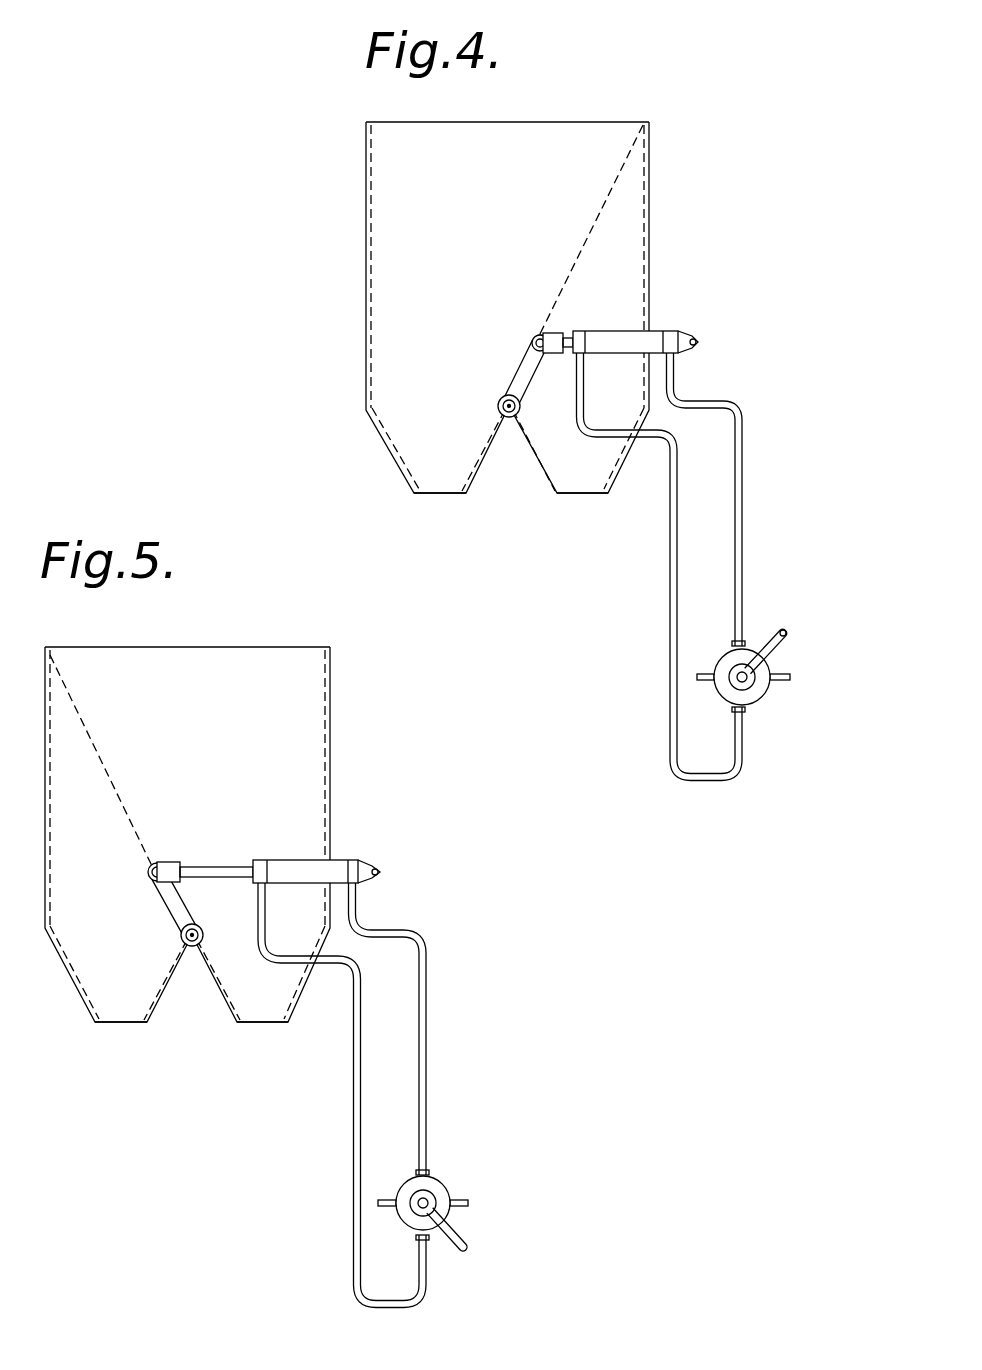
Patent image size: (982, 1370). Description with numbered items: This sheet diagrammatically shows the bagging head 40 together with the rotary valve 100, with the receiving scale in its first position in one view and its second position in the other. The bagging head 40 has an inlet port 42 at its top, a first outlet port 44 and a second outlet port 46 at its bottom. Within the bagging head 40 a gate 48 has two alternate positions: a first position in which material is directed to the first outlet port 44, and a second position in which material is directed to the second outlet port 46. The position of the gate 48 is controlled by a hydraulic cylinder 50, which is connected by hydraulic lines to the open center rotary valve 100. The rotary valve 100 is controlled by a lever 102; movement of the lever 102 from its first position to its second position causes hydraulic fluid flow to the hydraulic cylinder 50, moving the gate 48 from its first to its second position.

In FIG. 4, the bagging head 40 is at (413, 238).
In FIG. 5, the bagging head 40 is at (282, 780).
In FIG. 4, the inlet port 42 is at (567, 122).
In FIG. 5, the inlet port 42 is at (198, 647).
In FIG. 4, the first outlet port 44 is at (440, 493).
In FIG. 5, the first outlet port 44 is at (130, 1022).
In FIG. 4, the second outlet port 46 is at (593, 493).
In FIG. 5, the second outlet port 46 is at (277, 1022).
In FIG. 4, the gate 48 is at (590, 245).
In FIG. 5, the gate 48 is at (112, 771).
In FIG. 4, the hydraulic cylinder 50 is at (615, 338).
In FIG. 5, the hydraulic cylinder 50 is at (295, 839).
In FIG. 4, the open center rotary valve 100 is at (764, 697).
In FIG. 5, the open center rotary valve 100 is at (445, 1184).
In FIG. 4, the lever 102 is at (787, 630).
In FIG. 5, the lever 102 is at (464, 1249).